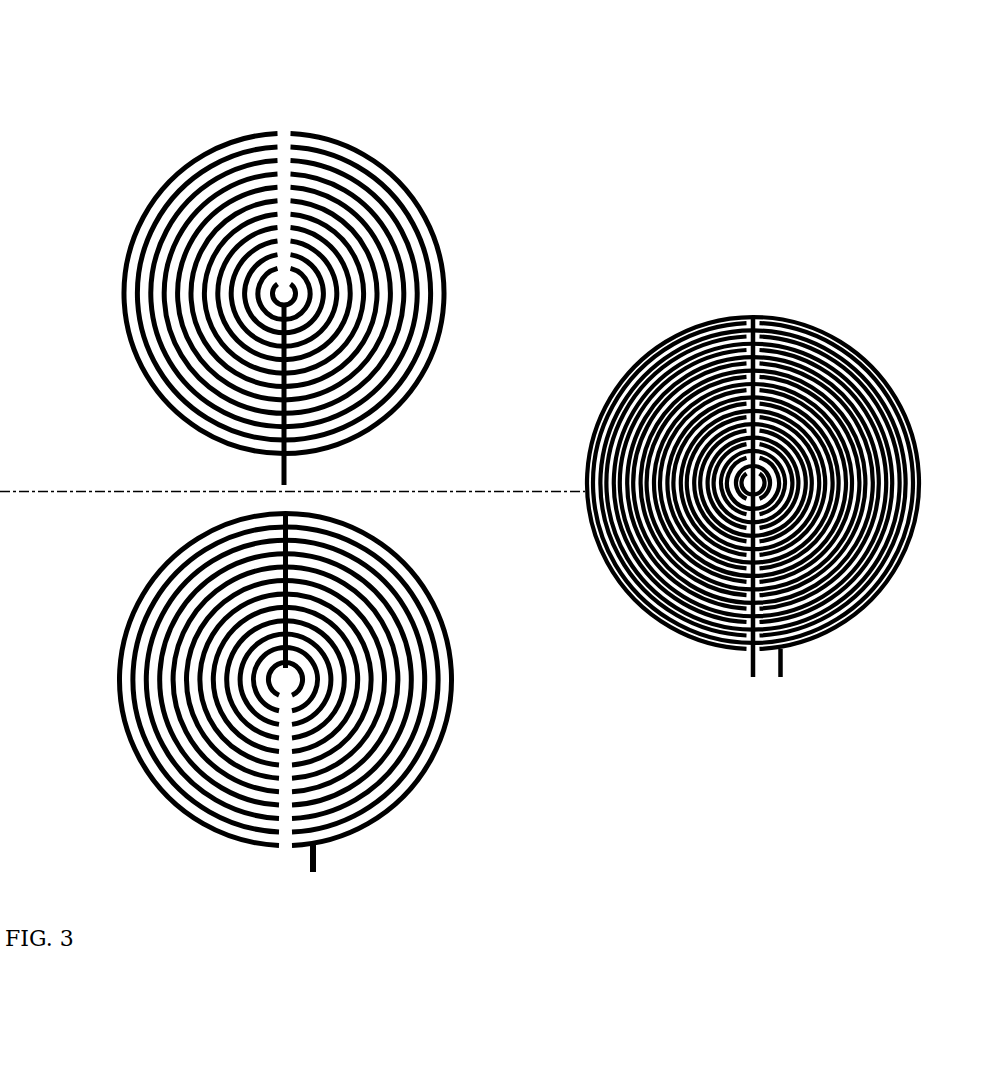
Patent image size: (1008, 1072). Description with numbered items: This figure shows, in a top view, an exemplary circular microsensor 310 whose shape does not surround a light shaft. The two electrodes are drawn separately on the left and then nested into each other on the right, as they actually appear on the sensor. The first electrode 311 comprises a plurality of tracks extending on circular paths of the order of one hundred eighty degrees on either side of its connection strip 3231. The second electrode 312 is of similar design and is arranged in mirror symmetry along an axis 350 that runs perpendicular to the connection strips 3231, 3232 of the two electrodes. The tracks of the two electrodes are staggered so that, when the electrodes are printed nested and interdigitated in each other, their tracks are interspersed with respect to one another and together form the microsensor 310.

The microsensor 310 is at (768, 286).
The first electrode 311 is at (258, 708).
The second electrode 312 is at (258, 309).
The connection strip 3231 is at (285, 560).
The connection strip 3232 is at (284, 377).
The axis 350 is at (82, 490).